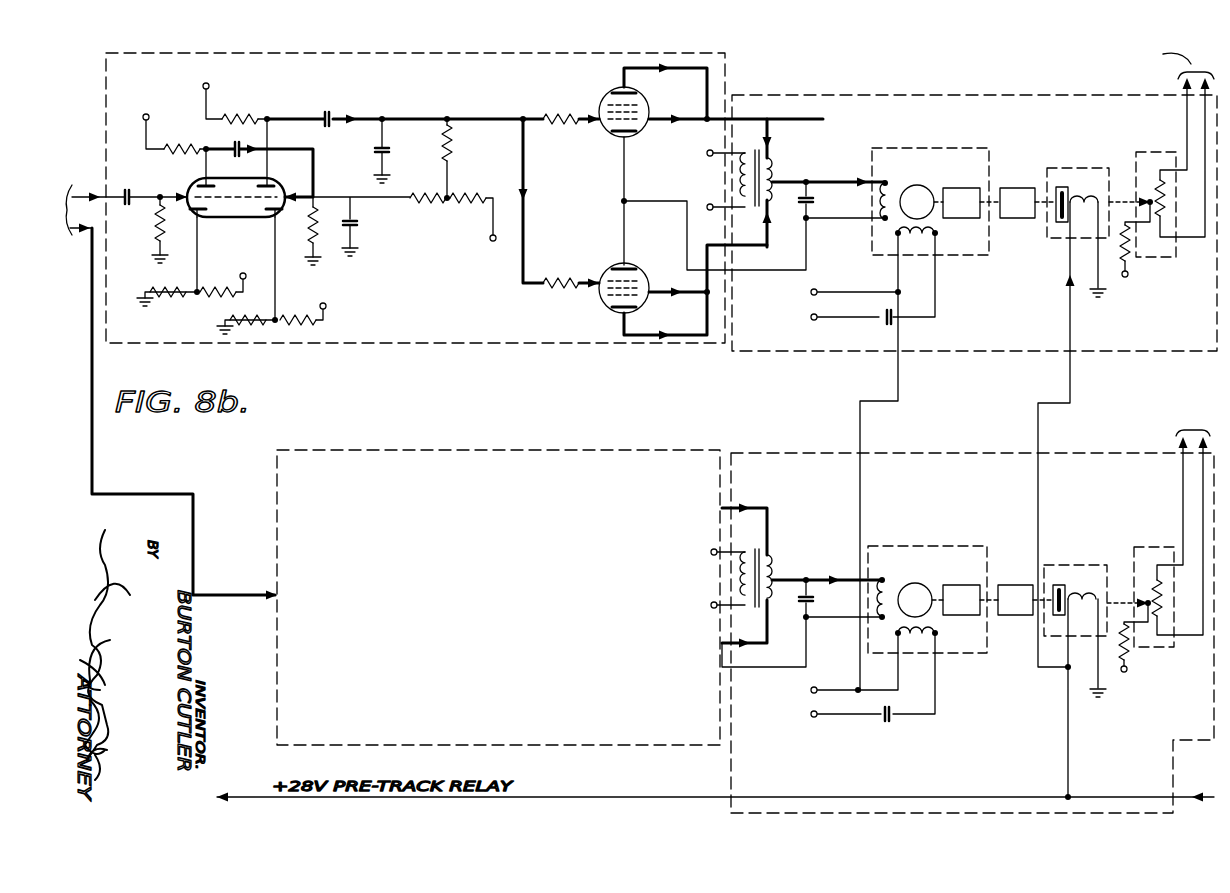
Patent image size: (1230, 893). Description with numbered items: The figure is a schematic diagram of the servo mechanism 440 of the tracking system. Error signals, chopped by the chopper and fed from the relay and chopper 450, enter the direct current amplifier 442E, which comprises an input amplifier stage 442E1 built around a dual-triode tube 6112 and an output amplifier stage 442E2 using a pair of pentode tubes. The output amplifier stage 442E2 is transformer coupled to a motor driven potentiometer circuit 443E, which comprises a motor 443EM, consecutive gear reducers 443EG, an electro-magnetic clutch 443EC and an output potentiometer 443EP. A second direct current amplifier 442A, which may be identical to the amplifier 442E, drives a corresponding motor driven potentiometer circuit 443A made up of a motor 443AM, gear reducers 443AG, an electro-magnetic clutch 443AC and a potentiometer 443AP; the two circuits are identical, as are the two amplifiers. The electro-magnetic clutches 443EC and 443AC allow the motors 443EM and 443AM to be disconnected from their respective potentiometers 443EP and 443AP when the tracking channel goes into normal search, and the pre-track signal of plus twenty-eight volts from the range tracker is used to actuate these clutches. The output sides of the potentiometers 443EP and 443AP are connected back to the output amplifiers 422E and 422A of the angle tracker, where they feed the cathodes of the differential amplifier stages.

The servo mechanism 440 is at (637, 394).
The relay and chopper 450 is at (166, 356).
The direct current amplifier 442E is at (356, 356).
The input amplifier stage 442E1 is at (387, 289).
The output amplifier stage 442E2 is at (605, 216).
The direct current amplifier 442A is at (277, 500).
The motor driven potentiometer circuit 443E is at (840, 352).
The motor 443EM is at (921, 185).
The consecutive gear reducers 443EG is at (1018, 190).
The electro-magnetic clutch 443EC is at (1100, 153).
The potentiometer 443EP is at (1154, 261).
The motor driven potentiometer circuit 443A is at (832, 448).
The motor 443AM is at (915, 583).
The gear reducers 443AG is at (1018, 585).
The electro-magnetic clutch 443AC is at (1070, 565).
The potentiometer 443AP is at (1156, 653).
The output amplifier 422E is at (1134, 69).
The output amplifier 422A is at (1158, 413).
The amplifier tube 6112 is at (195, 180).